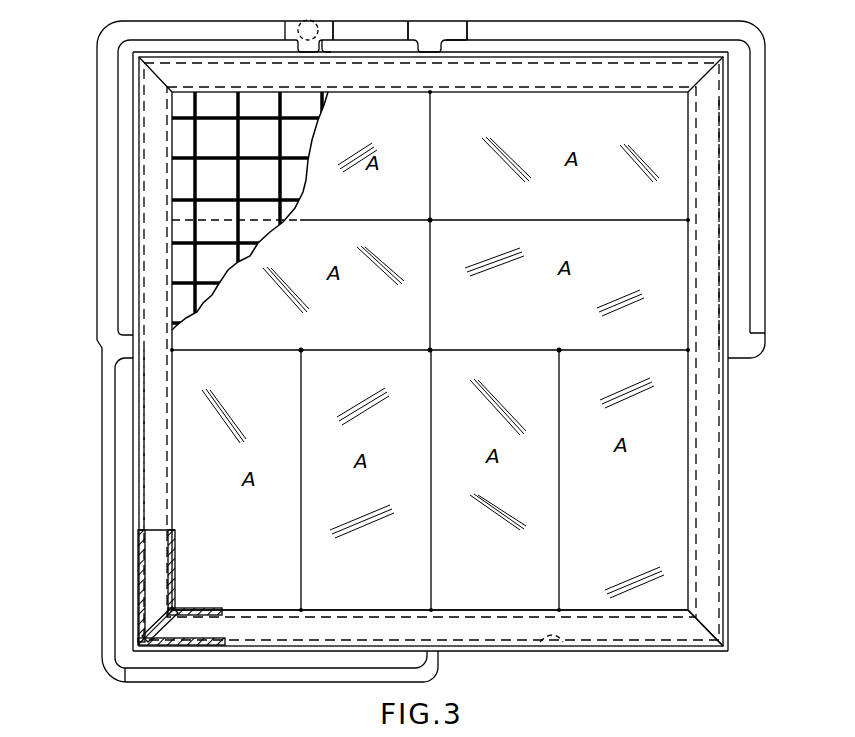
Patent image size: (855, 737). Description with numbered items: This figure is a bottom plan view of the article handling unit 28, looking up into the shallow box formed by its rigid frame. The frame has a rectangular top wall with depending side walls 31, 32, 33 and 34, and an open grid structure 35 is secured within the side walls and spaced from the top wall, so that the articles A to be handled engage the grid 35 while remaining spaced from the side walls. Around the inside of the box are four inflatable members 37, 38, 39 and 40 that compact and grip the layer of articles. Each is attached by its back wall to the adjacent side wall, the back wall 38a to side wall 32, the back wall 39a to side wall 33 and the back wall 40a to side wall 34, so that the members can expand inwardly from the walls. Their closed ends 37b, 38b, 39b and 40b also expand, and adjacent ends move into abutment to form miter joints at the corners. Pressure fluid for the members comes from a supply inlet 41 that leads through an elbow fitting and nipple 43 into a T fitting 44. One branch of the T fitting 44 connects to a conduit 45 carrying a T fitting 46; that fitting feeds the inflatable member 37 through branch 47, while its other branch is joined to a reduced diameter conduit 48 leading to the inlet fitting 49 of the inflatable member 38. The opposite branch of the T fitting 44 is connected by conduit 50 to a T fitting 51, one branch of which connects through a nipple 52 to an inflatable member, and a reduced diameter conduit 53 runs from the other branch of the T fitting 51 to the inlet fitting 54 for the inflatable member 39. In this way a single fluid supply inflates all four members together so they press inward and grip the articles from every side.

The article handling unit 28 is at (740, 520).
The side wall 31 is at (590, 53).
The side wall 32 is at (133, 198).
The side wall 33 is at (273, 652).
The side wall 34 is at (732, 444).
The open grid structure 35 is at (287, 143).
The inflatable member 37 is at (492, 82).
The closed end 37b is at (168, 82).
The inflatable member 38 is at (697, 500).
The back wall 38a is at (718, 202).
The closed end 38b is at (702, 97).
The inflatable member 39 is at (360, 620).
The back wall 39a is at (555, 663).
The closed end 39b is at (175, 625).
The inflatable member 40 is at (147, 247).
The back wall 40a is at (147, 487).
The closed end 40b is at (145, 63).
The supply inlet 41 is at (327, 50).
The nipple 43 is at (312, 27).
The T fitting 44 is at (330, 30).
The conduit 45 is at (390, 28).
The T fitting 46 is at (418, 28).
The branch 47 is at (416, 50).
The reduced diameter conduit 48 is at (768, 95).
The inlet fitting 49 is at (733, 358).
The conduit 50 is at (184, 23).
The T fitting 51 is at (100, 333).
The nipple 52 is at (130, 360).
The reduced diameter conduit 53 is at (108, 570).
The inlet fitting 54 is at (444, 653).